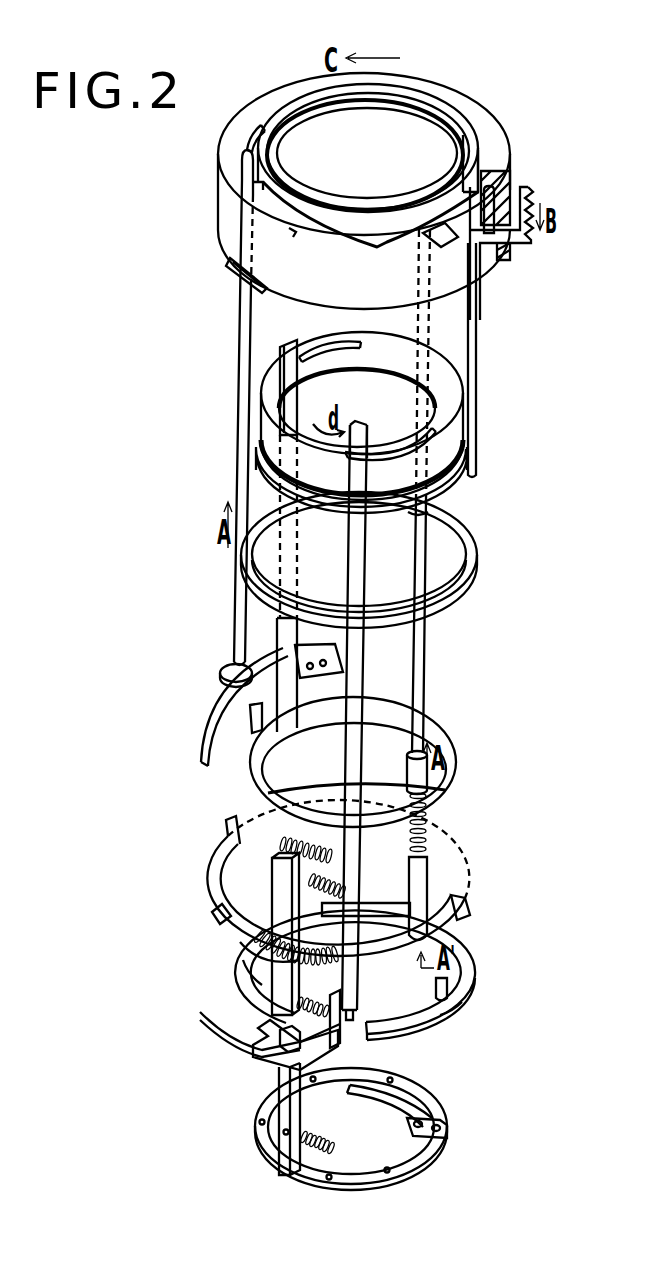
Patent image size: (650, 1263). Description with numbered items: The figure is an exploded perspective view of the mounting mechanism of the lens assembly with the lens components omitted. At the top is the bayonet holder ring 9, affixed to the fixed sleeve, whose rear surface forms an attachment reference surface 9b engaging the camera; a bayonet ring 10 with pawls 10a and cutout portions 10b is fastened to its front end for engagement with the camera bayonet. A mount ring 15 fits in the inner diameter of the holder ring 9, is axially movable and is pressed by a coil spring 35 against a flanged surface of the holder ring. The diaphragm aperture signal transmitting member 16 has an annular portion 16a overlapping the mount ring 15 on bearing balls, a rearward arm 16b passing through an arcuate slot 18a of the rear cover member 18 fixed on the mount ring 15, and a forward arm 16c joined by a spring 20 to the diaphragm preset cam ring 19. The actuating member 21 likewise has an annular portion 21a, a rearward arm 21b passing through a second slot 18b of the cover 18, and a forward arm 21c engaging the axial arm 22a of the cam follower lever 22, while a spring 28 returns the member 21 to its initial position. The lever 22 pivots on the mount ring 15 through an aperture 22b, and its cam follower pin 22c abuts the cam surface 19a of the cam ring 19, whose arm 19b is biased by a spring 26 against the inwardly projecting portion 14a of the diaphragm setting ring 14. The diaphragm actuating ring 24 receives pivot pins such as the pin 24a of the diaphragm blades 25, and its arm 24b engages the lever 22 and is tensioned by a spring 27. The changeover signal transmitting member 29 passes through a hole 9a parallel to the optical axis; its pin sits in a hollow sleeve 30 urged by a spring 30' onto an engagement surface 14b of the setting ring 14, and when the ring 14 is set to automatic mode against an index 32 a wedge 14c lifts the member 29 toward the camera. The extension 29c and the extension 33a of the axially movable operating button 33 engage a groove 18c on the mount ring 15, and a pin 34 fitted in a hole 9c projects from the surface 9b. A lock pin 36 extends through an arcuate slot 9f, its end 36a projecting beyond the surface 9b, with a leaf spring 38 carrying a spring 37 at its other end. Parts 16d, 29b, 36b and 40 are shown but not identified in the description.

The bayonet holder ring 9 is at (228, 218).
The hole 9a is at (440, 240).
The attachment reference surface 9b is at (468, 190).
The hole 9c is at (512, 191).
The arcuate slot 9f is at (262, 133).
The bayonet ring 10 is at (493, 136).
The pawls 10a is at (258, 190).
The slots or cutout portions 10b is at (310, 234).
The diaphragm setting ring 14 is at (226, 830).
The inwardly projecting portion 14a is at (257, 937).
The engagement surface 14b is at (462, 922).
The wedge 14c is at (218, 903).
The mount ring 15 is at (456, 422).
The diaphragm aperture signal transmitting member 16 is at (285, 575).
The annular portion 16a is at (258, 773).
The arm portion 16b is at (286, 358).
The arm portion 16c is at (266, 805).
The bracket of frame 16d is at (255, 728).
The rear cover member 18 is at (455, 390).
The arcuate slot 18a is at (320, 353).
The arcuate slot 18b is at (418, 448).
The groove 18c is at (452, 481).
The diaphragm preset cam ring 19 is at (255, 990).
The cam surface 19a is at (445, 1020).
The arm 19b is at (250, 969).
The spring 20 is at (292, 853).
The actuating member 21 is at (358, 755).
The annular portion 21a is at (432, 880).
The arm portion 21b is at (357, 437).
The arm portion 21c is at (362, 1008).
The cam follower lever 22 is at (300, 1035).
The arm 22a is at (345, 1045).
The aperture 22b is at (300, 1008).
The cam follower pin 22c is at (447, 988).
The diaphragm actuating ring 24 is at (385, 1175).
The pivot pin 24a is at (447, 1130).
The arm 24b is at (292, 1064).
The diaphragm blades 25 is at (415, 1102).
The spring 26 is at (275, 1050).
The spring 27 is at (318, 1155).
The spring 28 is at (315, 881).
The changeover signal transmitting member 29 is at (428, 650).
The sleeve 29b is at (425, 782).
The extension 29c is at (425, 516).
The hollow sleeve 30 is at (468, 891).
The spring 30' is at (471, 823).
The index 32 is at (224, 932).
The operating button 33 is at (540, 204).
The extension 33a is at (475, 450).
The pin 34 is at (500, 171).
The spring 35 is at (462, 572).
The lock pin 36 is at (243, 470).
The end of lock pin 36a is at (243, 157).
The lower end of rod 36b is at (240, 653).
The spring 37 is at (222, 726).
The leaf spring 38 is at (228, 676).
The tab 40 is at (237, 275).